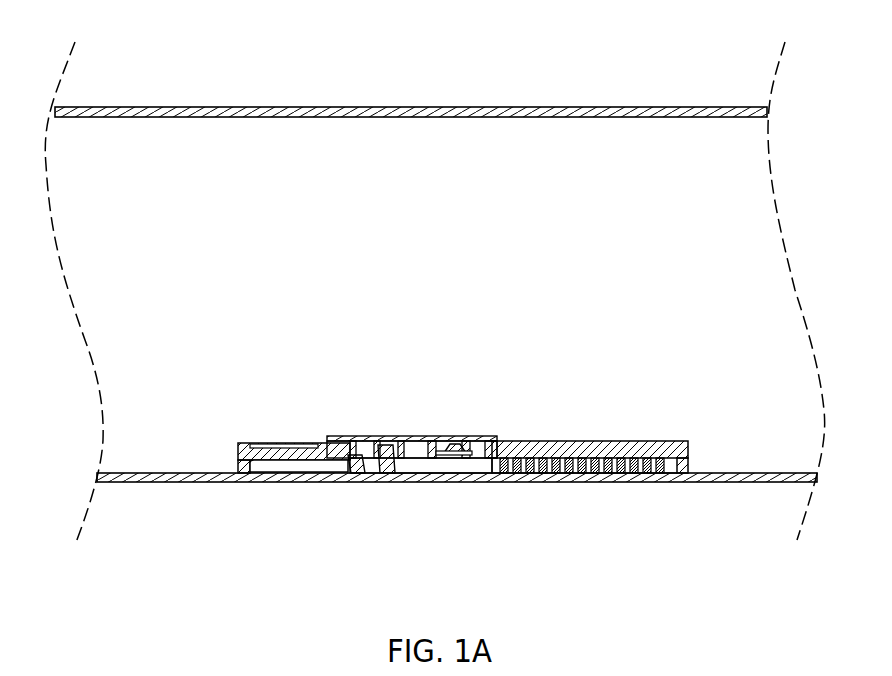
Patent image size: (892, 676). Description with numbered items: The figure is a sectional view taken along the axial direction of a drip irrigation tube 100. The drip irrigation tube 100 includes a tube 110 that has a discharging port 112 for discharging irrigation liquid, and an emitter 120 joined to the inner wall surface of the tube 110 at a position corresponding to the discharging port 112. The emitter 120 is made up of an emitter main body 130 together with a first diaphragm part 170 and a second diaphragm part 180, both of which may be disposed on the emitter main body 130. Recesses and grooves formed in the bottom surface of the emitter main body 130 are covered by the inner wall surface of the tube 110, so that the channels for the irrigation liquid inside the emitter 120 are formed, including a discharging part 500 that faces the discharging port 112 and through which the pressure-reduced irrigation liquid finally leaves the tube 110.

The drip irrigation tube 100 is at (703, 70).
The tube 110 is at (413, 107).
The discharging port 112 is at (300, 483).
The emitter 120 is at (447, 383).
The emitter main body 130 is at (538, 441).
The first diaphragm part 170 is at (453, 442).
The second diaphragm part 180 is at (365, 436).
The discharging part 500 is at (284, 483).